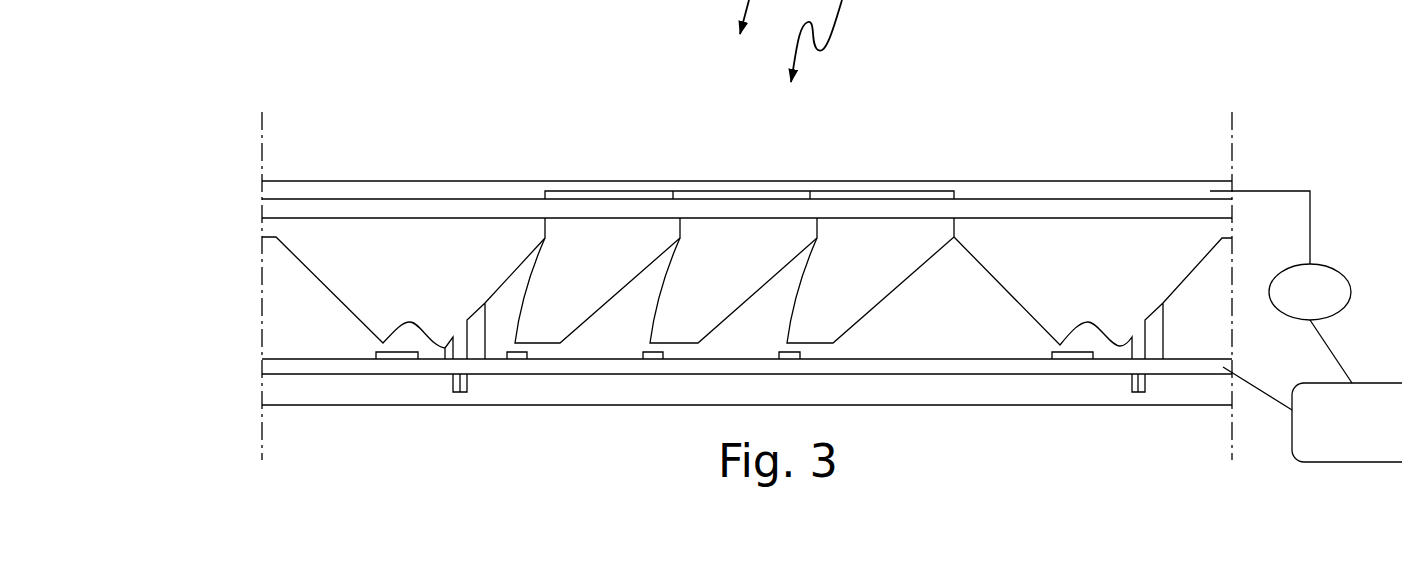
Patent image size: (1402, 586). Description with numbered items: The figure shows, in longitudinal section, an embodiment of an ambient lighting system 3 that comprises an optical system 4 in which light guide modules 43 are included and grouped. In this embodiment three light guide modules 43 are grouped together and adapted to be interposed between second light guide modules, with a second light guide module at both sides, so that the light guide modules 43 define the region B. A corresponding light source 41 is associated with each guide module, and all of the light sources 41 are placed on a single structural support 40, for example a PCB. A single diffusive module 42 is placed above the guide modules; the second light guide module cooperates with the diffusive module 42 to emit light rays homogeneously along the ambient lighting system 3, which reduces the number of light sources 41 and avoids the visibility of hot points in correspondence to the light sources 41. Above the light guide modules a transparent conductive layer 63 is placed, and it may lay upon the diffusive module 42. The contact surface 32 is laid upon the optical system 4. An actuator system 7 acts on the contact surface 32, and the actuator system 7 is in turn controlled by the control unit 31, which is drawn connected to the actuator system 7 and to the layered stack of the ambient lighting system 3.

The ambient lighting system 3 is at (214, 161).
The optical system 4 is at (216, 260).
The actuator system 7 is at (1281, 287).
The control unit 31 is at (1312, 414).
The contact surface 32 is at (340, 192).
The structural support 40 is at (300, 371).
The light source 41 is at (397, 355).
The diffusive module 42 is at (295, 208).
The light guide module 43 is at (617, 253).
The transparent conductive layer 63 is at (563, 193).